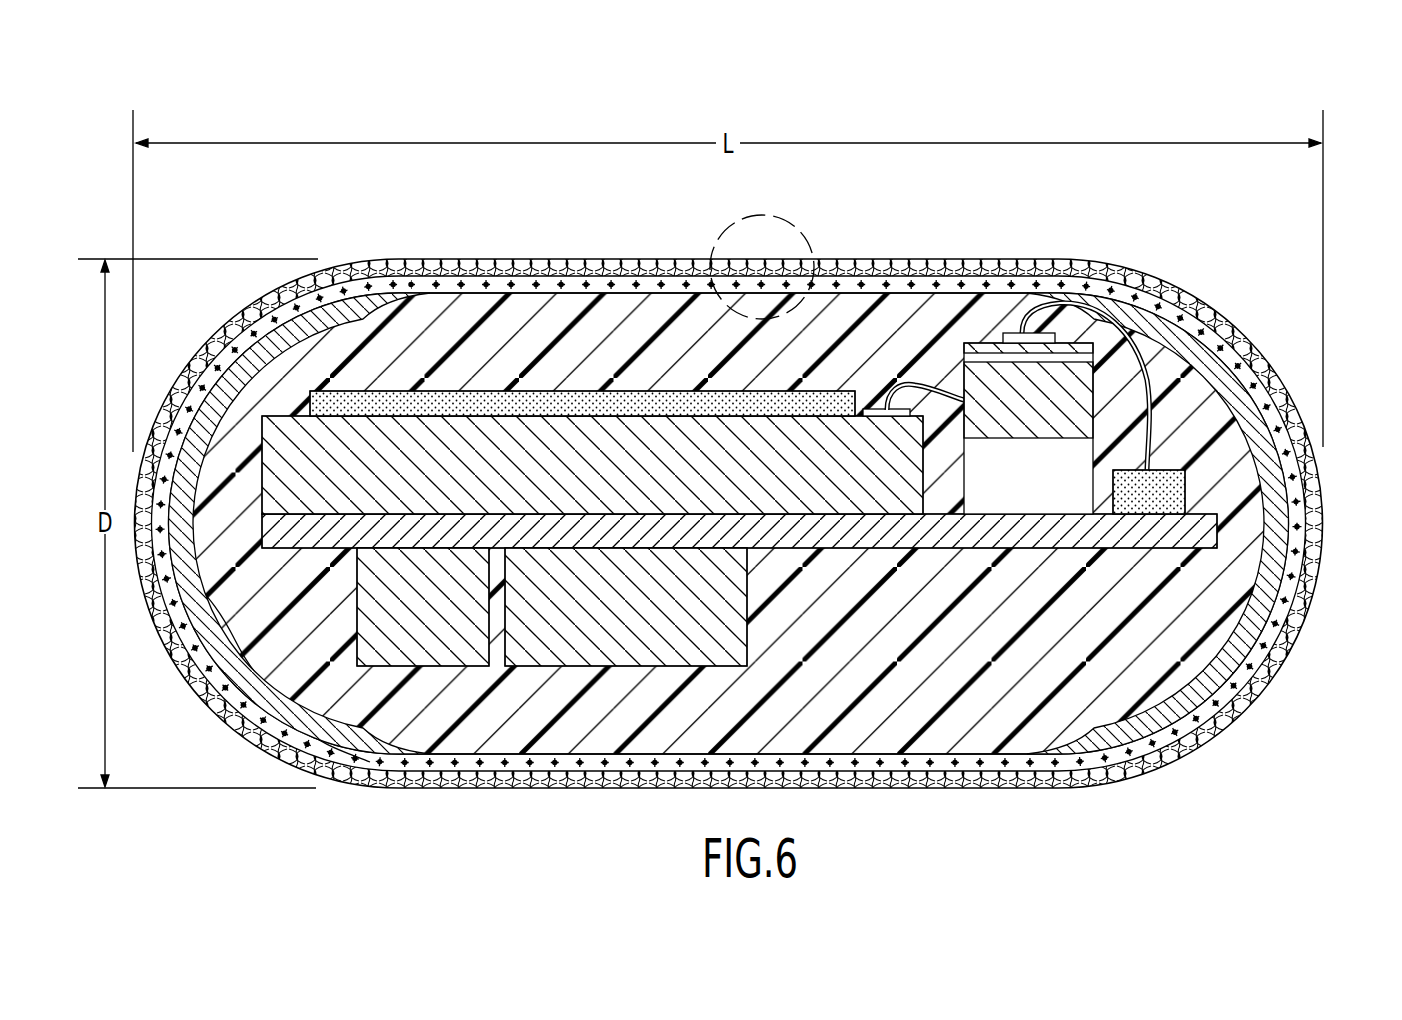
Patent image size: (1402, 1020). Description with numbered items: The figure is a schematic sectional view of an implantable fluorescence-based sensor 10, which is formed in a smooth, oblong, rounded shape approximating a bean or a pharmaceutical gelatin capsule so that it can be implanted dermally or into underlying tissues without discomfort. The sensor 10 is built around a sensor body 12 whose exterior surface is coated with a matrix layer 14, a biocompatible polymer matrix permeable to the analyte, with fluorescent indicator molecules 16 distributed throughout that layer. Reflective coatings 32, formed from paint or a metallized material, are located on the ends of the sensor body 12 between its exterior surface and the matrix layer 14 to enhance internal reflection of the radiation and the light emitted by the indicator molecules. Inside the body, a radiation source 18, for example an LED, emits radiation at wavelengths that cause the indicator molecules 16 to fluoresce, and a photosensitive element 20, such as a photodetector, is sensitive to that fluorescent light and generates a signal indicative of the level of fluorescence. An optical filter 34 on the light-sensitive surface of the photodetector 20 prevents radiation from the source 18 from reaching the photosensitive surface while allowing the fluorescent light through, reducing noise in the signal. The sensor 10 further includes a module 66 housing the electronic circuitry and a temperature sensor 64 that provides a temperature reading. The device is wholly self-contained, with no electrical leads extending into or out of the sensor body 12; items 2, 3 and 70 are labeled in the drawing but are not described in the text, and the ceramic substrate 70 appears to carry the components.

The sensor 10 is at (584, 108).
The shell layer 2 is at (232, 668).
The detail region 3 is at (804, 236).
The sensor body 12 is at (503, 723).
The matrix layer 14 is at (1178, 308).
The fluorescent indicator molecules 16 is at (1255, 387).
The radiation source 18 is at (1065, 416).
The photosensitive element 20 is at (666, 480).
The reflective coatings 32 is at (1258, 618).
The optical filter 34 is at (488, 398).
The temperature sensor 64 is at (470, 622).
The module 66 is at (698, 634).
The ceramic substrate 70 is at (958, 538).